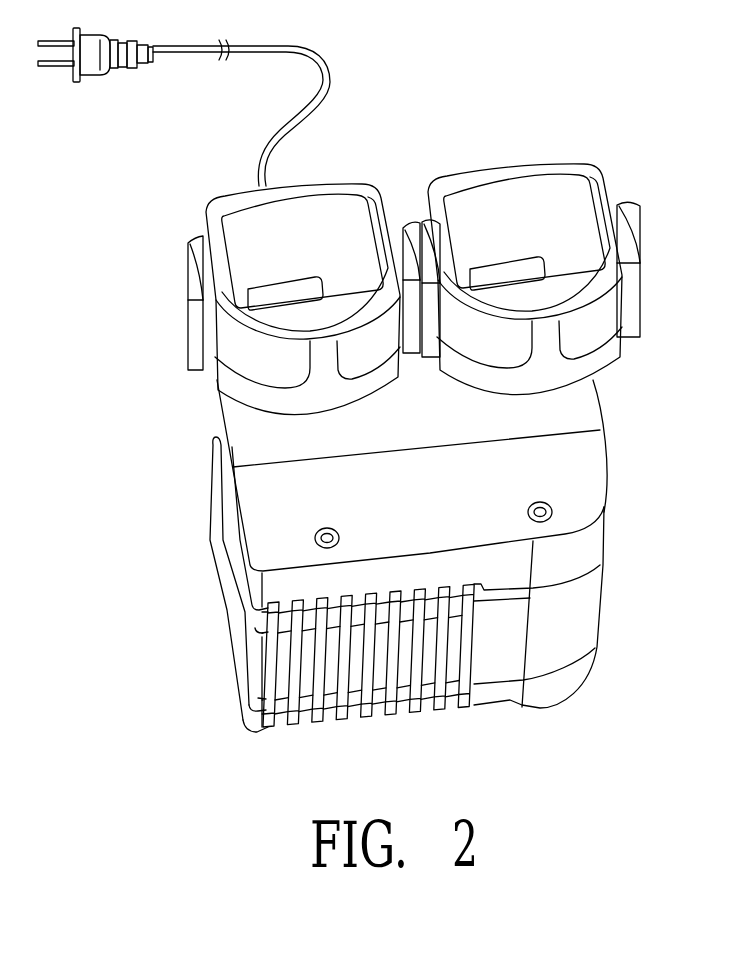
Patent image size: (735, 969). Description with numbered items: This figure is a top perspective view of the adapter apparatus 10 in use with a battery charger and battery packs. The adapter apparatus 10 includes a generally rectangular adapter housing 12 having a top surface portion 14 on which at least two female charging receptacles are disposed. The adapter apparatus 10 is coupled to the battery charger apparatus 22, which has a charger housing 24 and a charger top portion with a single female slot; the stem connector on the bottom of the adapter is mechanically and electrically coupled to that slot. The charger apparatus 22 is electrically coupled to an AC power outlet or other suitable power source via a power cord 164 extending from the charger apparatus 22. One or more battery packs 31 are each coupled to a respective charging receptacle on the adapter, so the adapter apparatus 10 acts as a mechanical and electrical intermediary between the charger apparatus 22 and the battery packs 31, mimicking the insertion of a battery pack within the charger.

The adapter apparatus 10 is at (618, 450).
The adapter housing 12 is at (210, 450).
The top surface portion 14 is at (412, 233).
The battery charger apparatus 22 is at (597, 645).
The charger housing 24 is at (405, 713).
The battery pack 31 is at (618, 180).
The power cord 164 is at (300, 89).